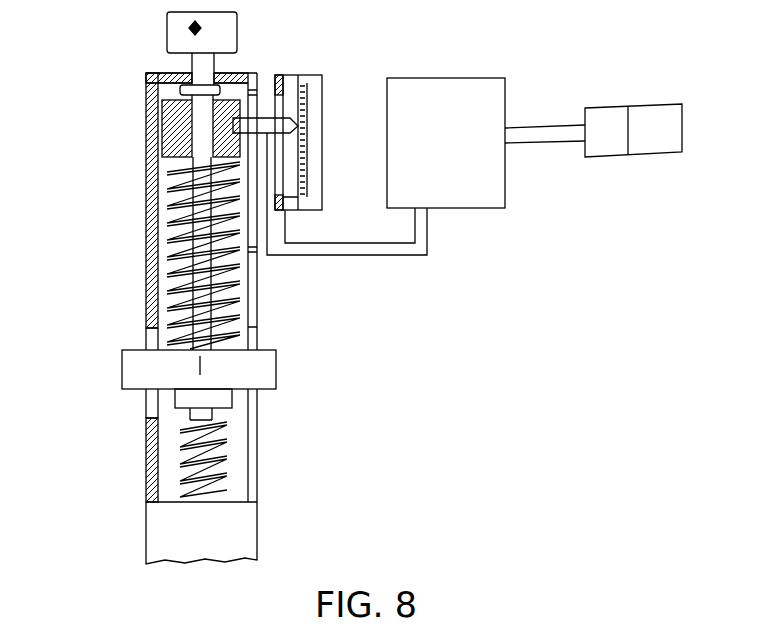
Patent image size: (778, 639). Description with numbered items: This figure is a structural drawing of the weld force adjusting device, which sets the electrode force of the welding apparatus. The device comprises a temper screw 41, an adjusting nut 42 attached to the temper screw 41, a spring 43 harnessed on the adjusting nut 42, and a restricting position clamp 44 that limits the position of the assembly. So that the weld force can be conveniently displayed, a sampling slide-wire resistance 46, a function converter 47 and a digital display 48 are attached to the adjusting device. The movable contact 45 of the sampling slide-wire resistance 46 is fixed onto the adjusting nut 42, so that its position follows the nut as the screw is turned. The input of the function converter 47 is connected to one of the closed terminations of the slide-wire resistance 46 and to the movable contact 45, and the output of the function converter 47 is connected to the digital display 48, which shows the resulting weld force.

The temper screw 41 is at (195, 58).
The adjusting nut 42 is at (150, 157).
The spring 43 is at (170, 228).
The restricting position clamp 44 is at (140, 358).
The movable contact 45 is at (288, 112).
The sampling slide-wire resistance 46 is at (302, 130).
The function converter 47 is at (443, 104).
The digital display 48 is at (598, 115).